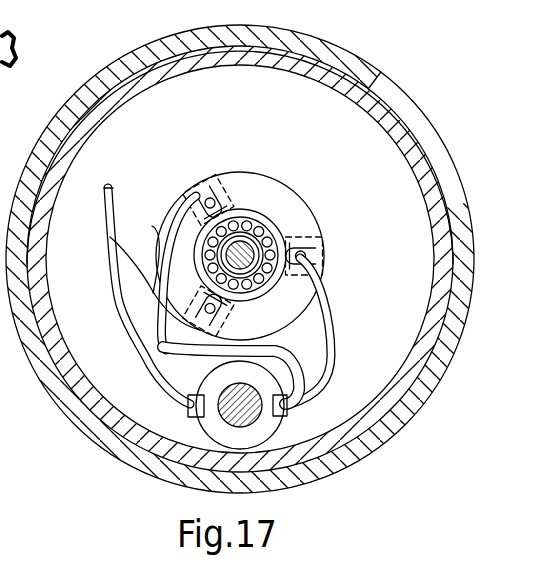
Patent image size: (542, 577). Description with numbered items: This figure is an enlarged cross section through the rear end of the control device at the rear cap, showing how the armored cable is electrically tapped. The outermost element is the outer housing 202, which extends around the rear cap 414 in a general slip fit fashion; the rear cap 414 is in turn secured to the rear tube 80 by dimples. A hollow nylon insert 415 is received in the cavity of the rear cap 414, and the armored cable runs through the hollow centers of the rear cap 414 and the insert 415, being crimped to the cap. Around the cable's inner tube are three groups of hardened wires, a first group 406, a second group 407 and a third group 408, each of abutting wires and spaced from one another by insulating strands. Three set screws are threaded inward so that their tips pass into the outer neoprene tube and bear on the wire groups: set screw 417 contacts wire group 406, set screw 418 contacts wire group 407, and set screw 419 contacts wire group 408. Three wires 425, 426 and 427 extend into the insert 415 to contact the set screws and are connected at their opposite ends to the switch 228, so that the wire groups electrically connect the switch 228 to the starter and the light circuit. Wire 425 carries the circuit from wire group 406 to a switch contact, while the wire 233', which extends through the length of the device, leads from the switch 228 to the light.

The outer housing 202 is at (446, 106).
The rear cap 414 is at (403, 187).
The rear tube 80 is at (326, 84).
The group of hardened wires 406 is at (245, 210).
The group of hardened wires 408 is at (284, 232).
The hollow nylon insert 415 is at (274, 226).
The set screw 417 is at (220, 182).
The set screw 418 is at (190, 344).
The set screw 419 is at (328, 245).
The wire 427 is at (327, 345).
The wire 233' is at (274, 375).
The wire 425 is at (104, 239).
The wire 426 is at (142, 303).
The group of hardened wires 407 is at (141, 253).
The switch 228 is at (268, 422).